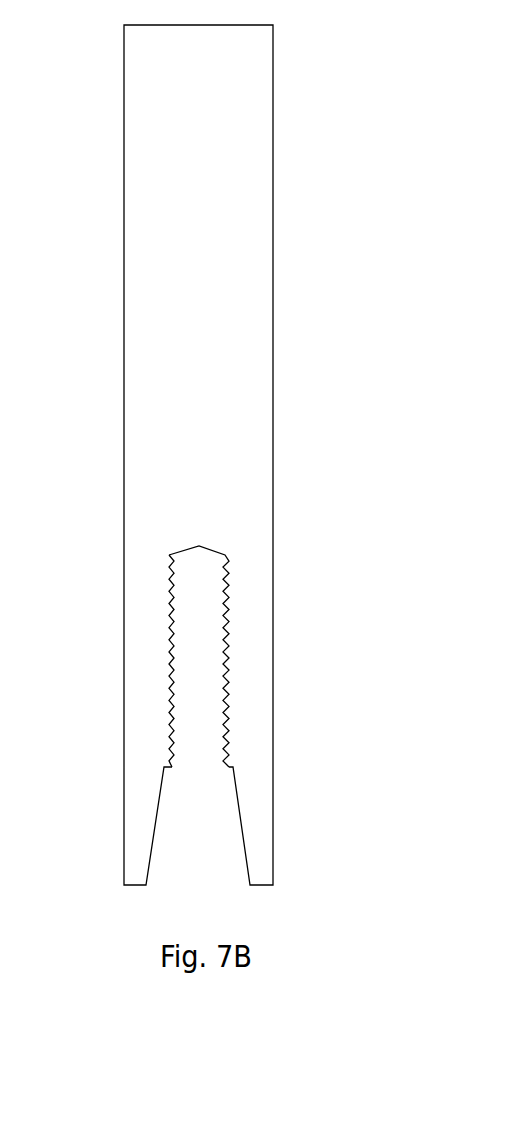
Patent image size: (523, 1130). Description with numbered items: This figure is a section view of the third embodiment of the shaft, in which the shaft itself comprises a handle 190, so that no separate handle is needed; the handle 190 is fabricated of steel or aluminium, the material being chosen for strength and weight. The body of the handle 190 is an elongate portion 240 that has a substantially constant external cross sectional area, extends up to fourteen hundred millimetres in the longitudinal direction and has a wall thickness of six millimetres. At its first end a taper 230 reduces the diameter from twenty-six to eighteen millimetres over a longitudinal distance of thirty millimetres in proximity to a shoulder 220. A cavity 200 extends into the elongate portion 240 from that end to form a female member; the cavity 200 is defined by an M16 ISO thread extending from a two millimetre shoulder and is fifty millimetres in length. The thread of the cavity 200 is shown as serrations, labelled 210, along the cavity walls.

The handle 190 is at (222, 455).
The elongate portion 240 is at (242, 425).
The cavity 200 is at (193, 643).
The serrations 210 is at (172, 705).
The shoulder 220 is at (168, 770).
The taper 230 is at (242, 823).